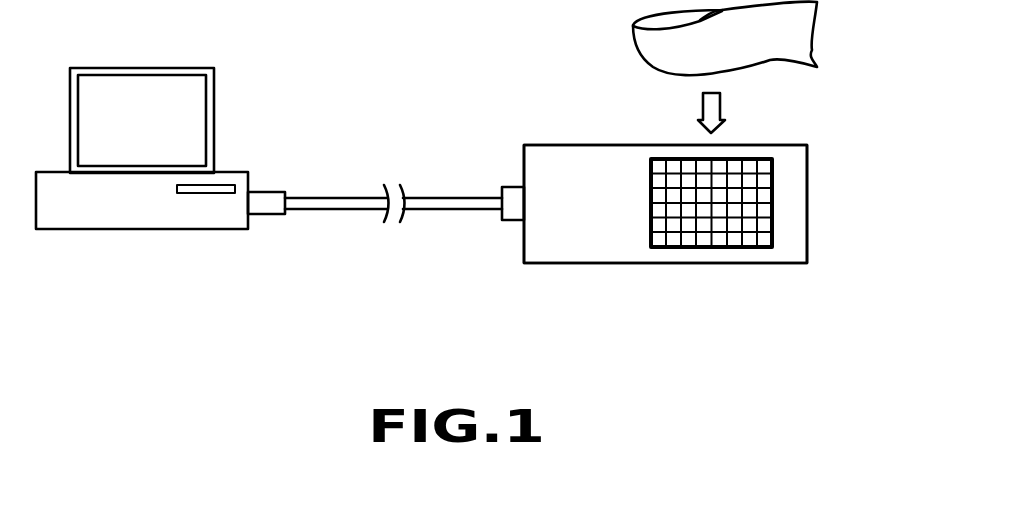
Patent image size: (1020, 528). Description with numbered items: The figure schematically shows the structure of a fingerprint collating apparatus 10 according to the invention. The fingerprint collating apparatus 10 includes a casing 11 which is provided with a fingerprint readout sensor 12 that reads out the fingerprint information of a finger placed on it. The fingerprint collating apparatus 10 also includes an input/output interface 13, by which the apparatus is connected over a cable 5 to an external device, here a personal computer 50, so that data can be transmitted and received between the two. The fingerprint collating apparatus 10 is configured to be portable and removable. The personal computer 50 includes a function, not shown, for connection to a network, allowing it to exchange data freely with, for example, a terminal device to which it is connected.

The personal computer 50 is at (140, 78).
The cable 5 is at (335, 200).
The input/output interface 13 is at (513, 190).
The fingerprint collating apparatus 10 is at (585, 152).
The casing 11 is at (587, 252).
The fingerprint readout sensor 12 is at (762, 183).